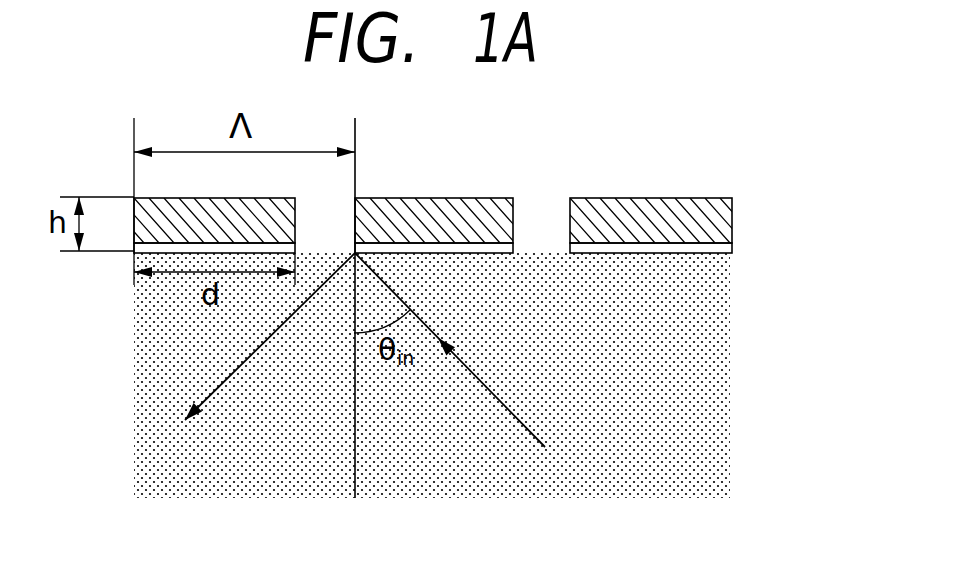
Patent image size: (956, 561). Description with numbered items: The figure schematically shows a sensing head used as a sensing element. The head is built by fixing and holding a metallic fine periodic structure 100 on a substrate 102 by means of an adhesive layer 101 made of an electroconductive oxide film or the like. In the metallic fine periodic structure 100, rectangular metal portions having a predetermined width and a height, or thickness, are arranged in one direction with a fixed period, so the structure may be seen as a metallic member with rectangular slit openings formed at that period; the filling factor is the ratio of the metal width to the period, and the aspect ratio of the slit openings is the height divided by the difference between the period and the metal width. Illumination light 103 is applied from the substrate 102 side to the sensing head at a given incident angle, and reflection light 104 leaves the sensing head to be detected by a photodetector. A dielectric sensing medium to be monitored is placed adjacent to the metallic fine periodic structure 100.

The metallic fine periodic structure 100 is at (687, 200).
The adhesive layer 101 is at (732, 247).
The substrate 102 is at (720, 418).
The illumination light 103 is at (481, 378).
The reflection light 104 is at (253, 353).